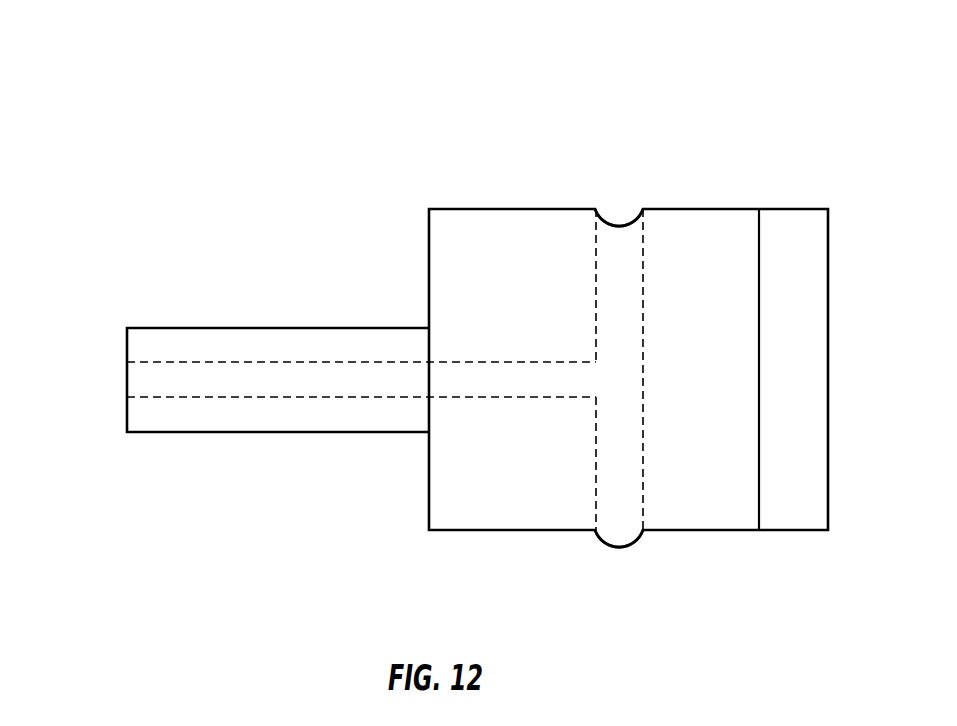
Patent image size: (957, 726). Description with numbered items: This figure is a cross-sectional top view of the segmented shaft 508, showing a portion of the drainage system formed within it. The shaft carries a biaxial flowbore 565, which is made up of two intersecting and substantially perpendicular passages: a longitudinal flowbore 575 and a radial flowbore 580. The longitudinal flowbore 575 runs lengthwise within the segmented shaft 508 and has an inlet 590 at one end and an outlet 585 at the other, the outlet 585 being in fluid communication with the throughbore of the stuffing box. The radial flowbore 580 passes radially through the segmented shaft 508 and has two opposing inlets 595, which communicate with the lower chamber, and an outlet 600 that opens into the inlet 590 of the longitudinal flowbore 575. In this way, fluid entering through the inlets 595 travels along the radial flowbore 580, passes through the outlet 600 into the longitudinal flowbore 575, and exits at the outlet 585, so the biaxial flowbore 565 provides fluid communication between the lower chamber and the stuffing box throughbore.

The segmented shaft 508 is at (751, 80).
The biaxial flowbore 565 is at (654, 359).
The longitudinal flowbore 575 is at (248, 362).
The radial flowbore 580 is at (645, 440).
The outlet 585 is at (123, 379).
The inlet 590 is at (588, 387).
The inlets 595 is at (623, 207).
The outlet 600 is at (590, 373).